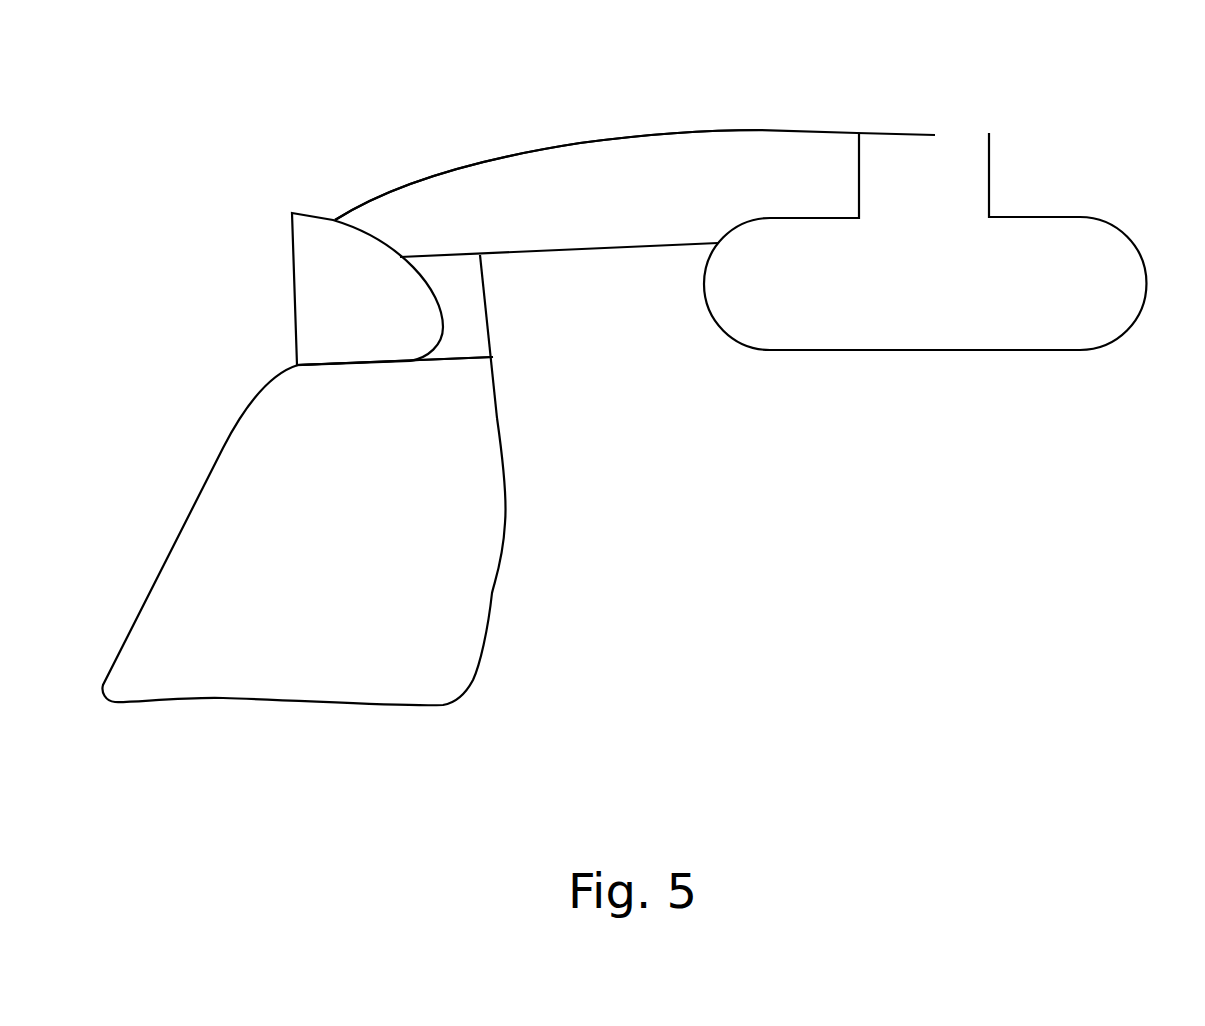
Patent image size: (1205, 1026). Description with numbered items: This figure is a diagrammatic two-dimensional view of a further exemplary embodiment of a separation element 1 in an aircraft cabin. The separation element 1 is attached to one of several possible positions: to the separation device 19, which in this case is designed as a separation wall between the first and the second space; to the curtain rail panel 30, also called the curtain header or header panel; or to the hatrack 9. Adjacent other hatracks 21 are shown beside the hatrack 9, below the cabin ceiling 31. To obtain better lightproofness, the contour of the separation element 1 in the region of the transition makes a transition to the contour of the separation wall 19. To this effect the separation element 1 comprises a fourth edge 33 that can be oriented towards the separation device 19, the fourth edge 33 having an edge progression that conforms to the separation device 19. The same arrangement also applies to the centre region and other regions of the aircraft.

The separation element 1 is at (492, 316).
The hatrack 9 is at (283, 290).
The separation device 19 is at (178, 527).
The adjacent other hatracks 21 is at (1063, 215).
The curtain rail panel 30 is at (487, 185).
The cabin ceiling 31 is at (623, 137).
The fourth edge 33 is at (457, 360).